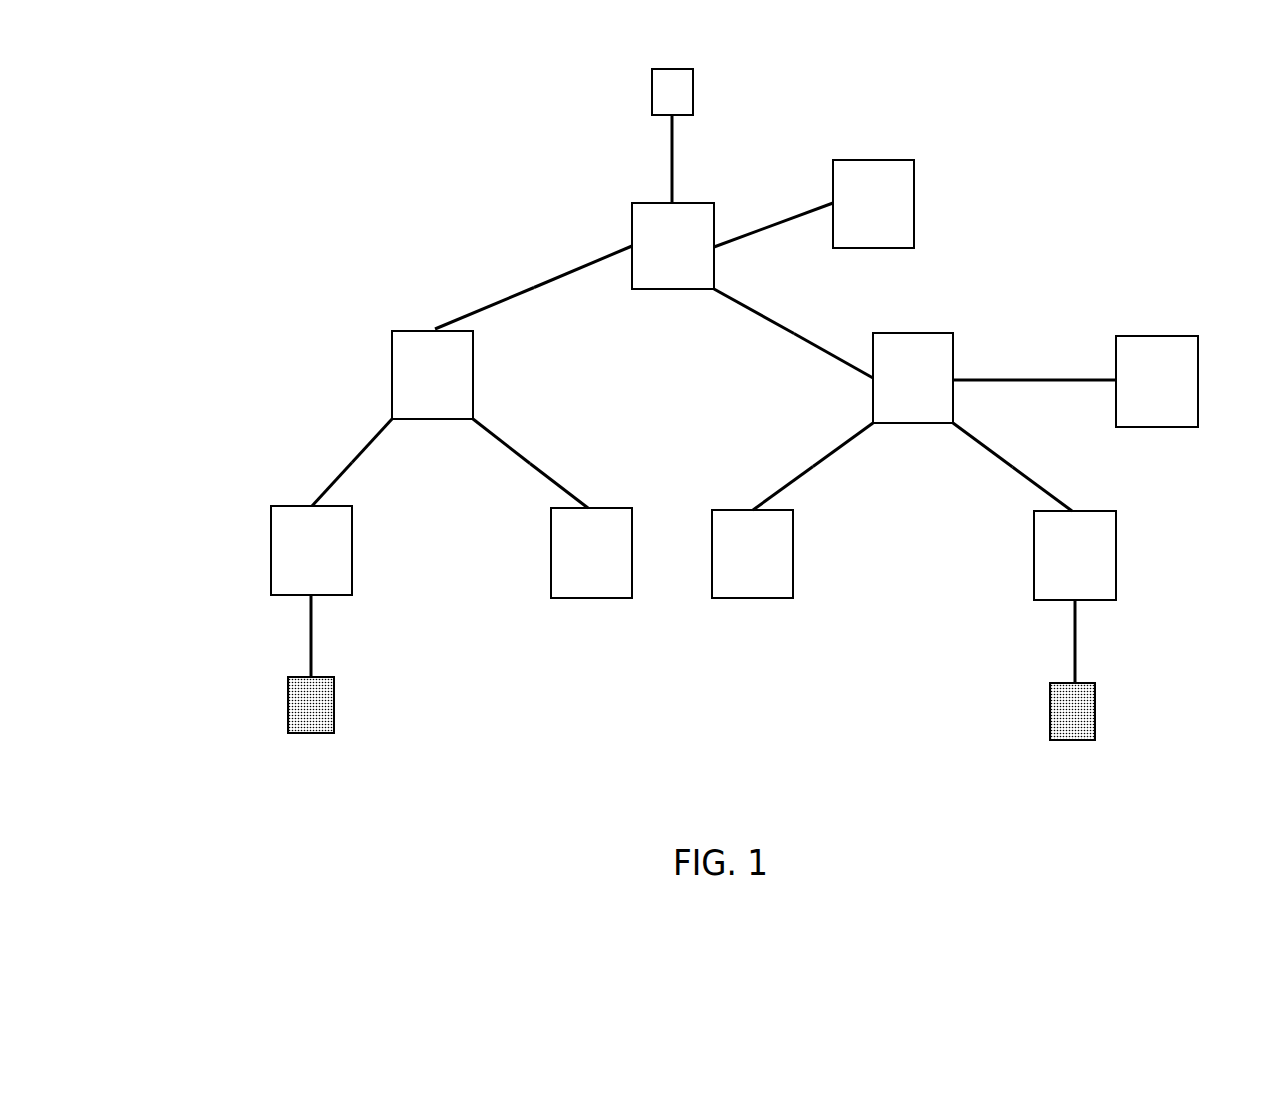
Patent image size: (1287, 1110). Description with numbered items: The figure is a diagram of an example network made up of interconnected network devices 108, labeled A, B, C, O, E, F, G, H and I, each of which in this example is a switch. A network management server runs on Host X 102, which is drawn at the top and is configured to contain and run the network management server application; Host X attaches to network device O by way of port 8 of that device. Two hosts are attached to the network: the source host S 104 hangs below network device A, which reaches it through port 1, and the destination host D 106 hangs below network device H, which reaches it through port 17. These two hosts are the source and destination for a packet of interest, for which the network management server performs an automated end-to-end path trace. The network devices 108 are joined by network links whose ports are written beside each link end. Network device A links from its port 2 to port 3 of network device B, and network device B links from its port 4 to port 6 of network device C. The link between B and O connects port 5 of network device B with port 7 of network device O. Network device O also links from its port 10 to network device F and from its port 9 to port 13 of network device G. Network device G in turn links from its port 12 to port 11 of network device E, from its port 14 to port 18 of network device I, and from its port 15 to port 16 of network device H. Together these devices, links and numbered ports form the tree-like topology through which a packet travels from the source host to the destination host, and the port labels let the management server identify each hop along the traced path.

The port 1 is at (322, 636).
The port 2 is at (322, 485).
The port 3 is at (378, 441).
The port 4 is at (501, 436).
The port 5 is at (481, 309).
The port 6 is at (566, 486).
The port 7 is at (583, 267).
The port 8 is at (682, 160).
The port 9 is at (750, 311).
The port 10 is at (773, 225).
The port 11 is at (771, 489).
The port 12 is at (846, 445).
The port 13 is at (833, 356).
The port 14 is at (994, 368).
The port 15 is at (976, 445).
The port 16 is at (1052, 489).
The port 17 is at (1088, 641).
The port 18 is at (1075, 366).
The Host X 102 is at (693, 89).
The source host S 104 is at (288, 706).
The destination host D 106 is at (1095, 711).
The network devices 108 is at (734, 380).